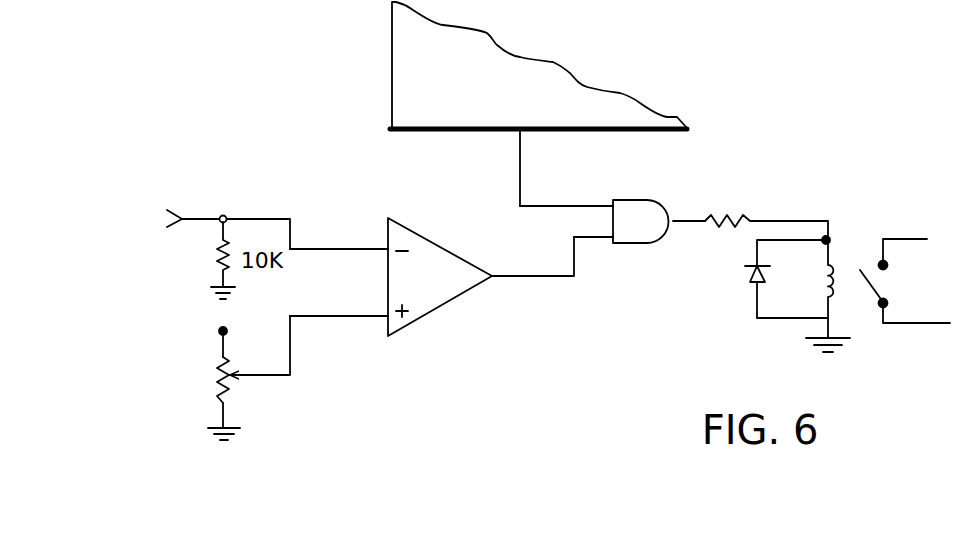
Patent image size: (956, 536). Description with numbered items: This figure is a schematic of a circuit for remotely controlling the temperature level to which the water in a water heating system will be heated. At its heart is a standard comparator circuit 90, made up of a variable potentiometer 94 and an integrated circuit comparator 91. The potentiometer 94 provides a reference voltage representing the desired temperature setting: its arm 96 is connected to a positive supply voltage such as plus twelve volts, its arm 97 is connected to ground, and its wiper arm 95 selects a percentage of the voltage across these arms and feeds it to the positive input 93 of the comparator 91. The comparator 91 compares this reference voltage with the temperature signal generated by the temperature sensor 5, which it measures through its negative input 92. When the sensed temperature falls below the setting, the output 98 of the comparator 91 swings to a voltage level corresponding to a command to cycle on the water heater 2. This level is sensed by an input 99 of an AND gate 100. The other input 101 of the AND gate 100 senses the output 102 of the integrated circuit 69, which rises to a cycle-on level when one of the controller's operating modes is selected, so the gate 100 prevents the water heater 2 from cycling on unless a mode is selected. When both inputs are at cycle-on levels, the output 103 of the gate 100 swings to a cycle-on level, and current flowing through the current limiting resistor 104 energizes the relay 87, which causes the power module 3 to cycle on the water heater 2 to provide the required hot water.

The integrated circuit 69 is at (452, 57).
The water heater 2 is at (538, 117).
The output of integrated circuit 102 is at (517, 133).
The temperature sensor 5 is at (101, 236).
The arm of potentiometer 96 is at (217, 353).
The variable potentiometer 94 is at (207, 387).
The wiper arm 95 is at (247, 377).
The arm of potentiometer 97 is at (215, 415).
The comparator circuit 90 is at (430, 304).
The integrated circuit comparator 91 is at (432, 235).
The negative input 92 is at (387, 248).
The positive input 93 is at (383, 322).
The output of comparator 98 is at (492, 273).
The AND gate 100 is at (648, 245).
The other input of AND gate 101 is at (613, 208).
The input of AND gate 99 is at (610, 243).
The output of AND gate 103 is at (674, 220).
The current limiting resistor 104 is at (748, 218).
The relay 87 is at (843, 256).
The power module 3 is at (908, 282).